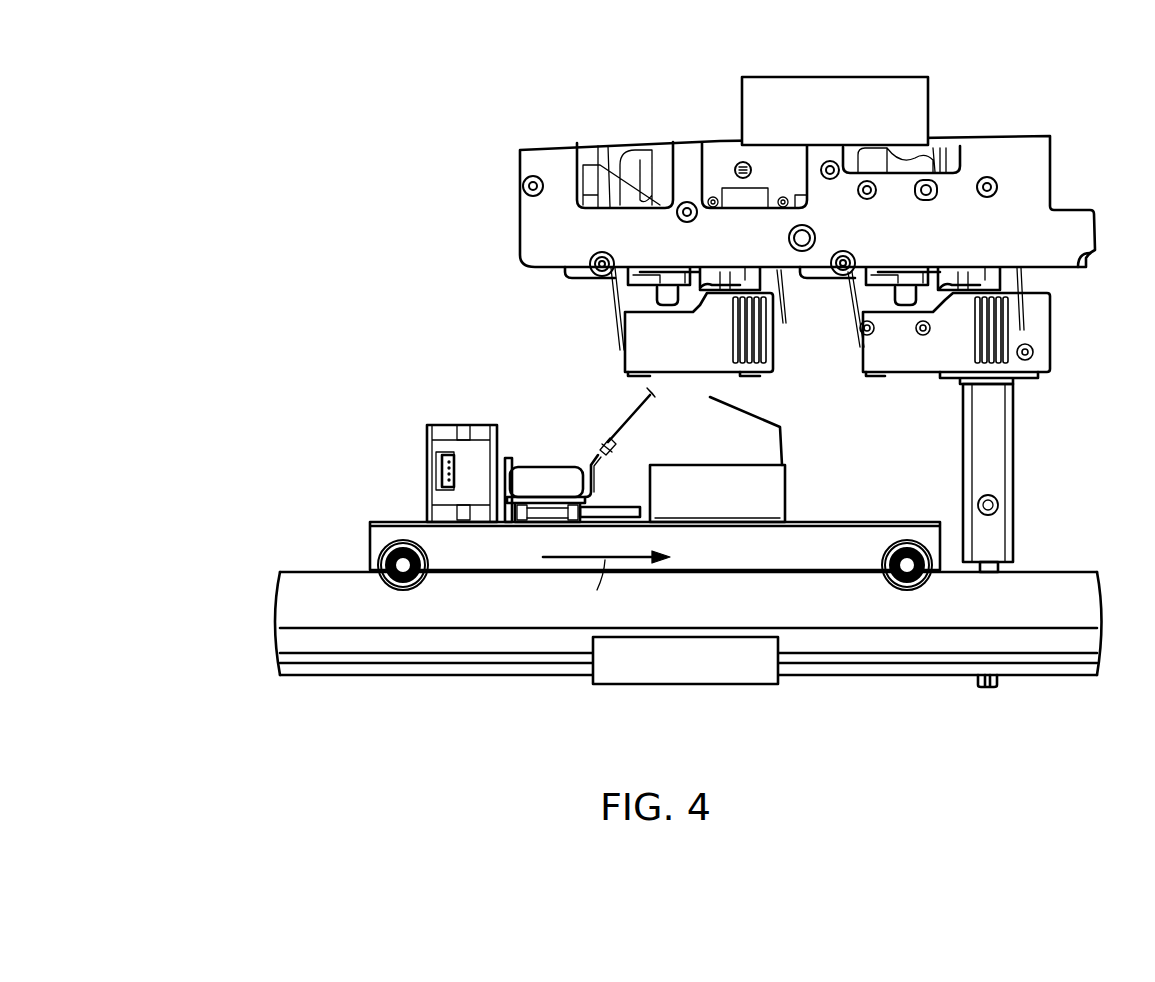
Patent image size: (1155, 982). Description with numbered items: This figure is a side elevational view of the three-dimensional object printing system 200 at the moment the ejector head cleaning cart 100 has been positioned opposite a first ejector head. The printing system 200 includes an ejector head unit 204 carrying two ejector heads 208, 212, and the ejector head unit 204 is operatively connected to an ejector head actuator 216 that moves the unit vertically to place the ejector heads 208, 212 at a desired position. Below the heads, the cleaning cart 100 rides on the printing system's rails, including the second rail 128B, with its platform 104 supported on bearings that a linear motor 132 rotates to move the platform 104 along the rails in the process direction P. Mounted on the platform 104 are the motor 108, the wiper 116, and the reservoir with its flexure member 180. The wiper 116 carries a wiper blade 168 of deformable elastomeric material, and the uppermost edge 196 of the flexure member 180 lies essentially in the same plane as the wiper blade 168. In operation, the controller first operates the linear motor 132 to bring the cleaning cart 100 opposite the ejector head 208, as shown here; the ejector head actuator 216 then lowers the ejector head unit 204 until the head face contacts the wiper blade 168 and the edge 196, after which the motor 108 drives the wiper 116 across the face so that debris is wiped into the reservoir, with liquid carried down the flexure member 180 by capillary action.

The ejector head cleaning cart 100 is at (296, 490).
The platform 104 is at (826, 540).
The motor 108 is at (463, 478).
The wiper 116 is at (566, 416).
The second rail 128B is at (298, 608).
The linear motor 132 is at (683, 686).
The wiper blade 168 is at (638, 396).
The flexure member 180 is at (783, 453).
The uppermost edge 196 is at (698, 403).
The three-dimensional object printing system 200 is at (306, 143).
The ejector head unit 204 is at (963, 178).
The ejector head 208 is at (625, 357).
The ejector head 212 is at (1025, 318).
The ejector head actuator 216 is at (930, 86).